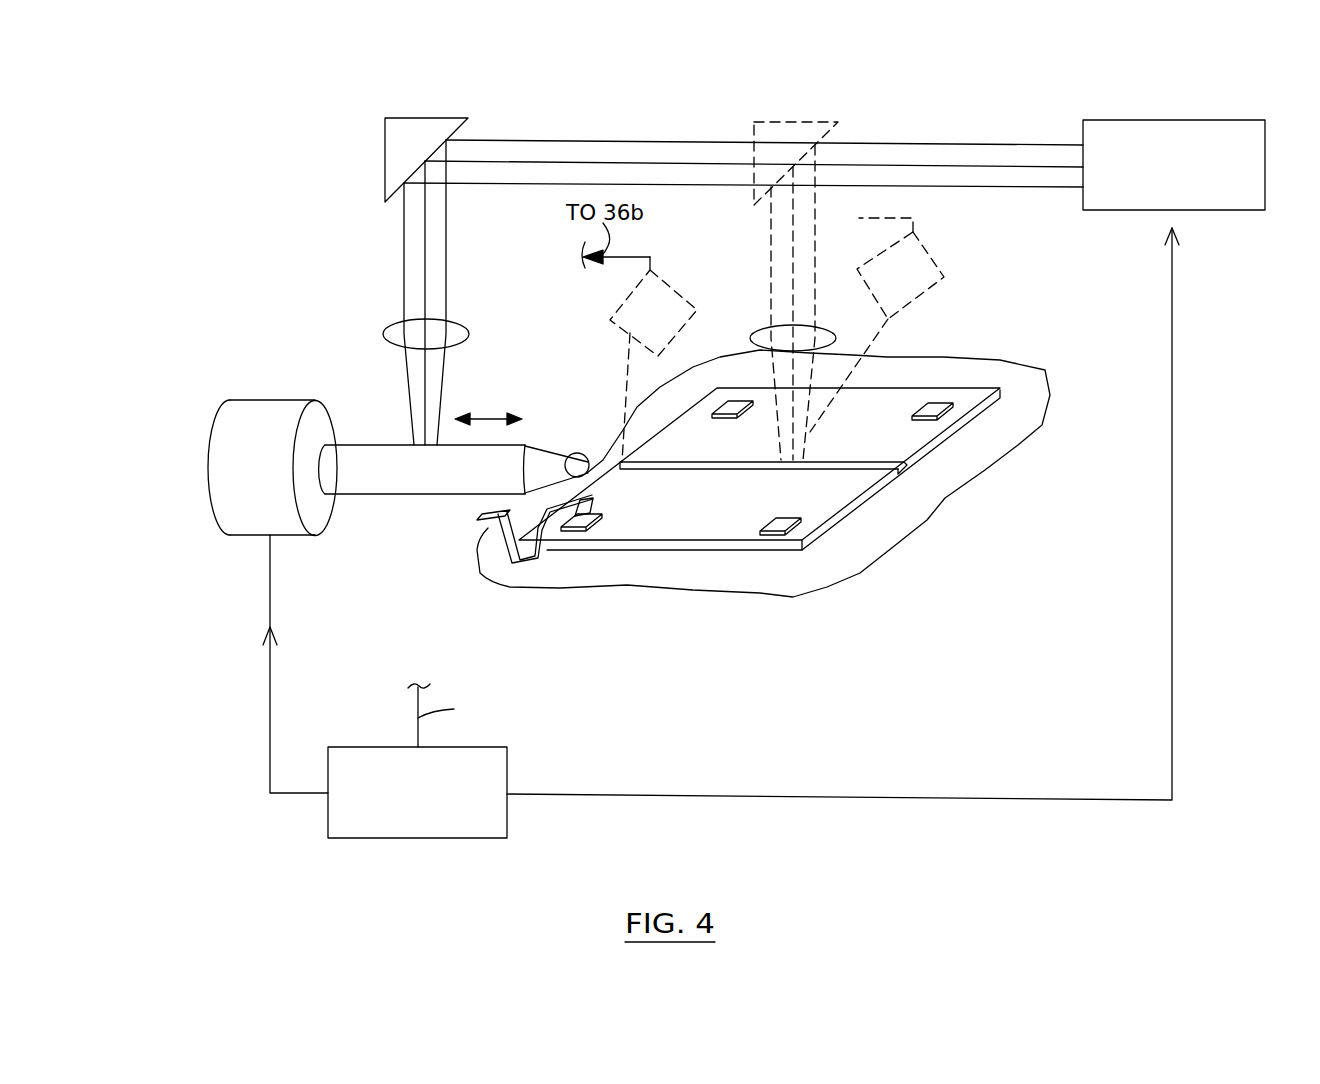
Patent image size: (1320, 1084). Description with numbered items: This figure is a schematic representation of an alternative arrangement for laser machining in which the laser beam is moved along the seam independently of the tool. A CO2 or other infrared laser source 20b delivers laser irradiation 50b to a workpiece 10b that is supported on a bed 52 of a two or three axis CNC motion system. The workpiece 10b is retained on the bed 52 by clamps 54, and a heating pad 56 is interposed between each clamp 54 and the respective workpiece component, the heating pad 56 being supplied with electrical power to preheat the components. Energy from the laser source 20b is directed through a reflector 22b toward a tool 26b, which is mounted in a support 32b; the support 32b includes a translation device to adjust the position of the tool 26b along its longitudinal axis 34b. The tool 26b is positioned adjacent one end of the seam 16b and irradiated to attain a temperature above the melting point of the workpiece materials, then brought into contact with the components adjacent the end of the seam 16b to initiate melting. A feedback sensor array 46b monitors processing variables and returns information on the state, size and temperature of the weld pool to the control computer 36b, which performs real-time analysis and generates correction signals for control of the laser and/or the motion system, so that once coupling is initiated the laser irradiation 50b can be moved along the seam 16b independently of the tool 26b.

The workpiece 10b is at (955, 443).
The seam 16b is at (877, 463).
The laser source 20b is at (1135, 131).
The reflector 22b is at (394, 157).
The tool 26b is at (380, 486).
The support 32b is at (257, 417).
The longitudinal axis 34b is at (486, 416).
The control computer 36b is at (480, 830).
The feedback sensor array 46b is at (642, 305).
The laser irradiation 50b is at (982, 142).
The bed 52 is at (882, 540).
The clamp 54 is at (543, 558).
The heating pad 56 is at (777, 523).